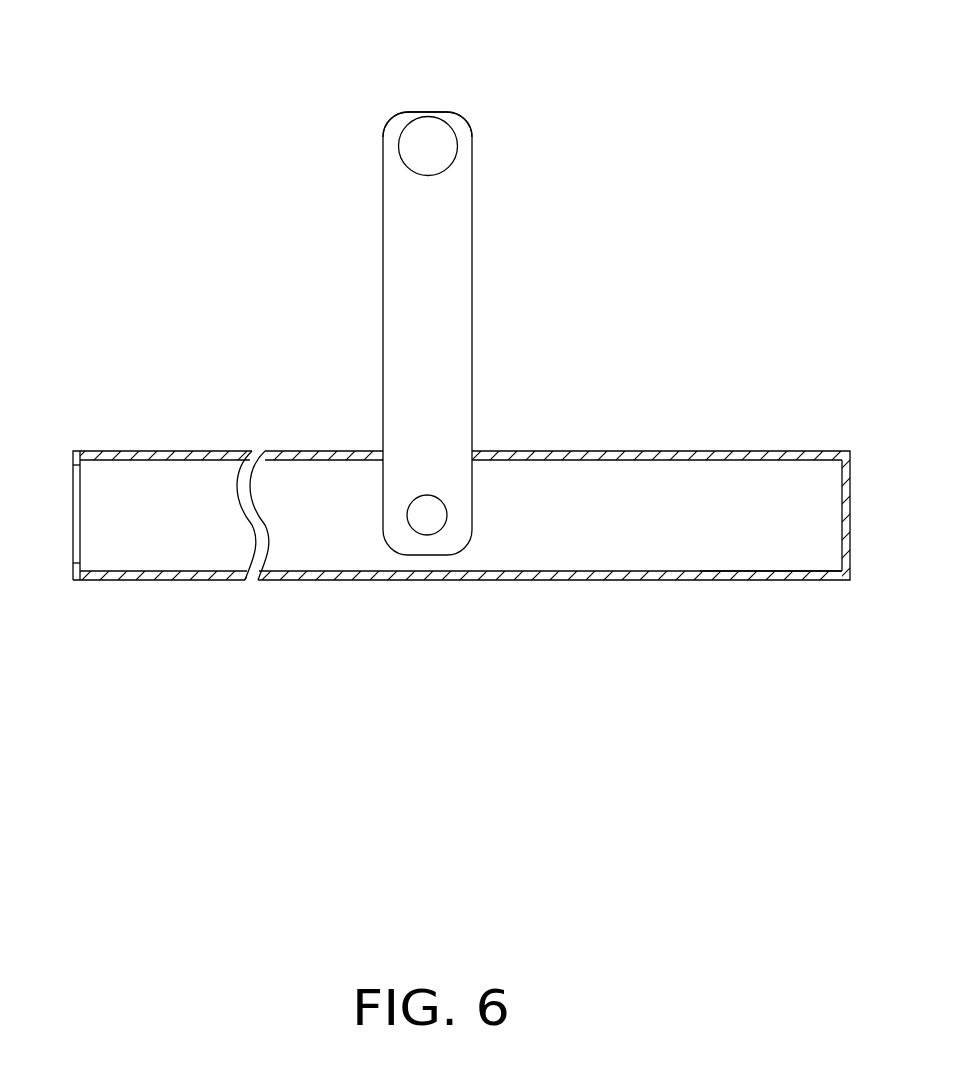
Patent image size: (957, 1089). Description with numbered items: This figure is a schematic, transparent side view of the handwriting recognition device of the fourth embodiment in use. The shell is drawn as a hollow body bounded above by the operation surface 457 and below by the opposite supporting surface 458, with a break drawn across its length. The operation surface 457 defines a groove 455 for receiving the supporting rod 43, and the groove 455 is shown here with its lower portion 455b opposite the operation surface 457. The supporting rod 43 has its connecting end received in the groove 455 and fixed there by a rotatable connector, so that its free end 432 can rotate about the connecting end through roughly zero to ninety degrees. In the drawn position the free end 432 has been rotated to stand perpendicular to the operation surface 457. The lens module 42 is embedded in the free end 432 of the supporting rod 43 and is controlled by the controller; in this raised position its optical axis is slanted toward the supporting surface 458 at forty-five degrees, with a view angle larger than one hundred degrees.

The lens module 42 is at (428, 130).
The free end 432 is at (457, 120).
The supporting rod 43 is at (447, 271).
The groove 455 is at (677, 451).
The second end of tube 455b is at (738, 528).
The operation surface 457 is at (168, 455).
The supporting surface 458 is at (350, 575).